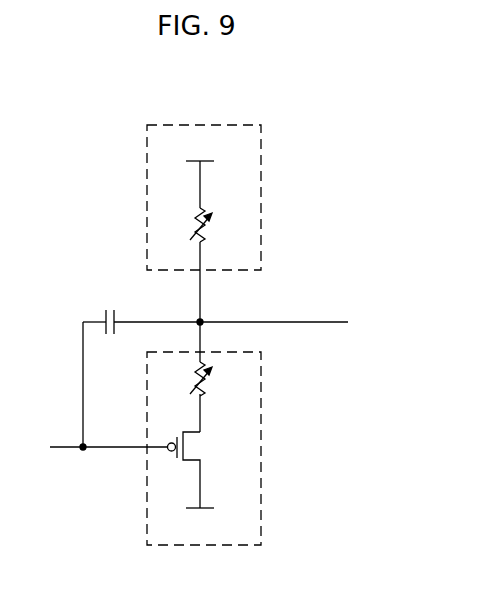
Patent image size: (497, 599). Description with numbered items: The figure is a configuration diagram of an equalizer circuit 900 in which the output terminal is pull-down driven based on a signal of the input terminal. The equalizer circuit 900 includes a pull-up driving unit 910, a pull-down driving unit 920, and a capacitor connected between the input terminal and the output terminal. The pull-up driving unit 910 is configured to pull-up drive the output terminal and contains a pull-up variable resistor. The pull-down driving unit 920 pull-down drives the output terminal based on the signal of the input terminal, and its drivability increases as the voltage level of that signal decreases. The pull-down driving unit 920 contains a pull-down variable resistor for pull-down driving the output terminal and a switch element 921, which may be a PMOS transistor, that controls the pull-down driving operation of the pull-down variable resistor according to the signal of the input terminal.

The equalizer circuit 900 is at (323, 186).
The pull-up driving unit 910 is at (218, 126).
The pull-down driving unit 920 is at (218, 353).
The switch element 921 is at (205, 450).